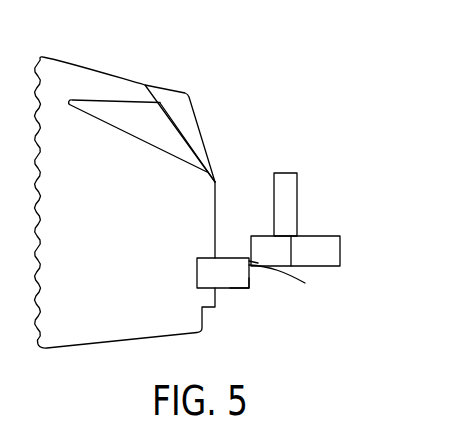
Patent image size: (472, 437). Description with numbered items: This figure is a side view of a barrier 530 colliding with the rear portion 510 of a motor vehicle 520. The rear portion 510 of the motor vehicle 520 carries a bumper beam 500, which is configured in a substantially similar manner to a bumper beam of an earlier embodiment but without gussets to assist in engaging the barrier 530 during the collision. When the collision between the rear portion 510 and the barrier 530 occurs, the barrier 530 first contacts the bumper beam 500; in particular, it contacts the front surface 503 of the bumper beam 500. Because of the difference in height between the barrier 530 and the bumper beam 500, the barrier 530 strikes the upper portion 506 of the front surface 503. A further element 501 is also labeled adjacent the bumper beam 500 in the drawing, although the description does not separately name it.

The bumper beam 500 is at (229, 306).
The housing 501 is at (230, 252).
The front surface 503 is at (250, 287).
The upper portion 506 is at (299, 279).
The rear portion 510 is at (233, 166).
The motor vehicle 520 is at (173, 77).
The barrier 530 is at (338, 224).